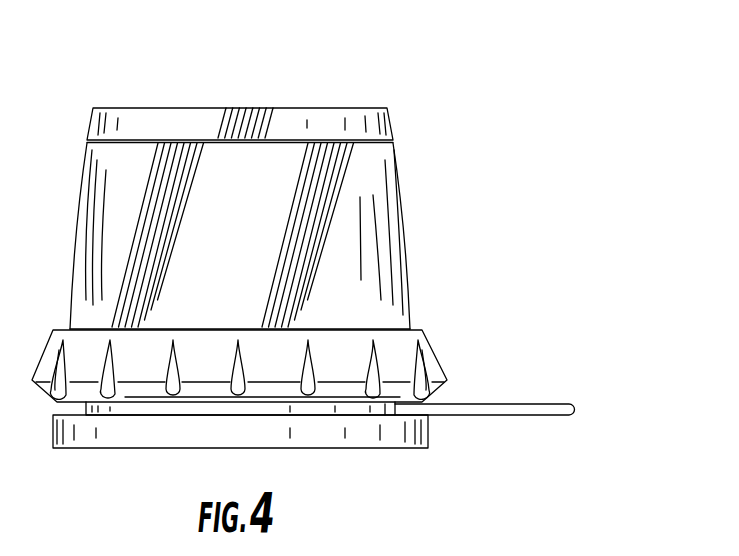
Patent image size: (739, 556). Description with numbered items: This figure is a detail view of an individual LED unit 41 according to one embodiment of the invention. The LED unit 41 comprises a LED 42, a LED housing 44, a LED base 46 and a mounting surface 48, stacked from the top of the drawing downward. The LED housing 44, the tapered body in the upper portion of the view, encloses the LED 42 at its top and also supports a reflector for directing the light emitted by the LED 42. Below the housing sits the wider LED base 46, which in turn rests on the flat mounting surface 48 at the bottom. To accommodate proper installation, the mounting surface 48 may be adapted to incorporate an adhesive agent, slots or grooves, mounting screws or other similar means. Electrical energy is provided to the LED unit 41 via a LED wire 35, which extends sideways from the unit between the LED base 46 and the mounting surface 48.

The LED unit 41 is at (535, 116).
The LED 42 is at (322, 108).
The LED housing 44 is at (410, 244).
The LED base 46 is at (445, 360).
The mounting surface 48 is at (392, 448).
The LED wire 35 is at (555, 413).